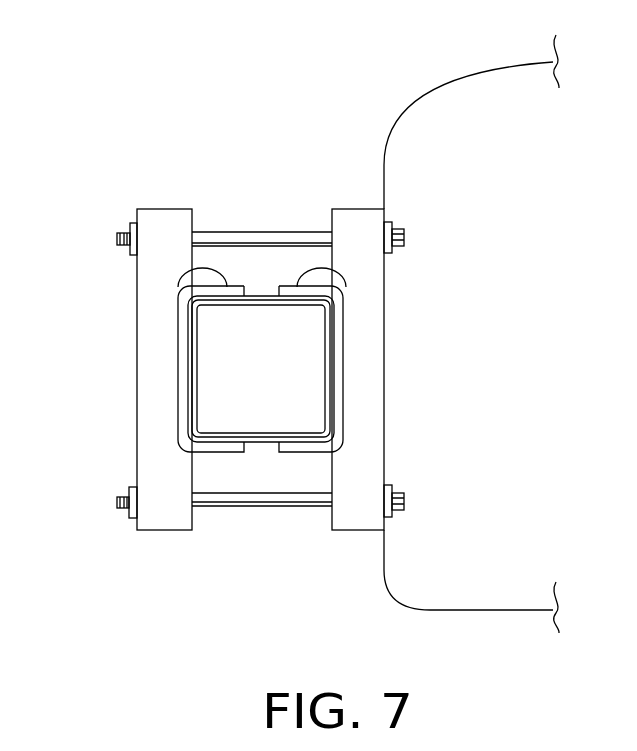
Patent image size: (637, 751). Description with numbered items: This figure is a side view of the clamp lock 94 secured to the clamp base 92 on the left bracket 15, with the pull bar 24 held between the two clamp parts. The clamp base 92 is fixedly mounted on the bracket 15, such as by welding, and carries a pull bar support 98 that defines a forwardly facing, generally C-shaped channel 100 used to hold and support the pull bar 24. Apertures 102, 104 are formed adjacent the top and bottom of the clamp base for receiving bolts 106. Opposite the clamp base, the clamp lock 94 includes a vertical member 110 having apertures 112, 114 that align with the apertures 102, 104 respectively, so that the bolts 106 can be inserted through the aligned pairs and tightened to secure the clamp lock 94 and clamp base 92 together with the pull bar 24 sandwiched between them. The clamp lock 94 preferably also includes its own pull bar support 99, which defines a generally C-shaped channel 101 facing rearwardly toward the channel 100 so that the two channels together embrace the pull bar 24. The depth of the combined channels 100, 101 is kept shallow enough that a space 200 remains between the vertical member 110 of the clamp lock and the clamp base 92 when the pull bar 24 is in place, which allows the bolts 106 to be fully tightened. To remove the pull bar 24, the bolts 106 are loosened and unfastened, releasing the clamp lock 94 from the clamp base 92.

The left bracket 15 is at (508, 344).
The pull bar 24 is at (262, 368).
The clamp base 92 is at (395, 354).
The clamp lock 94 is at (129, 373).
The pull bar support 98 is at (326, 268).
The pull bar support 99 is at (197, 268).
The channel 100 is at (325, 402).
The channel 101 is at (197, 373).
The aperture 102 is at (325, 229).
The aperture 104 is at (332, 508).
The bolts 106 is at (265, 230).
The vertical member 110 is at (150, 272).
The aperture 112 is at (203, 229).
The aperture 114 is at (192, 508).
The space 200 is at (262, 448).